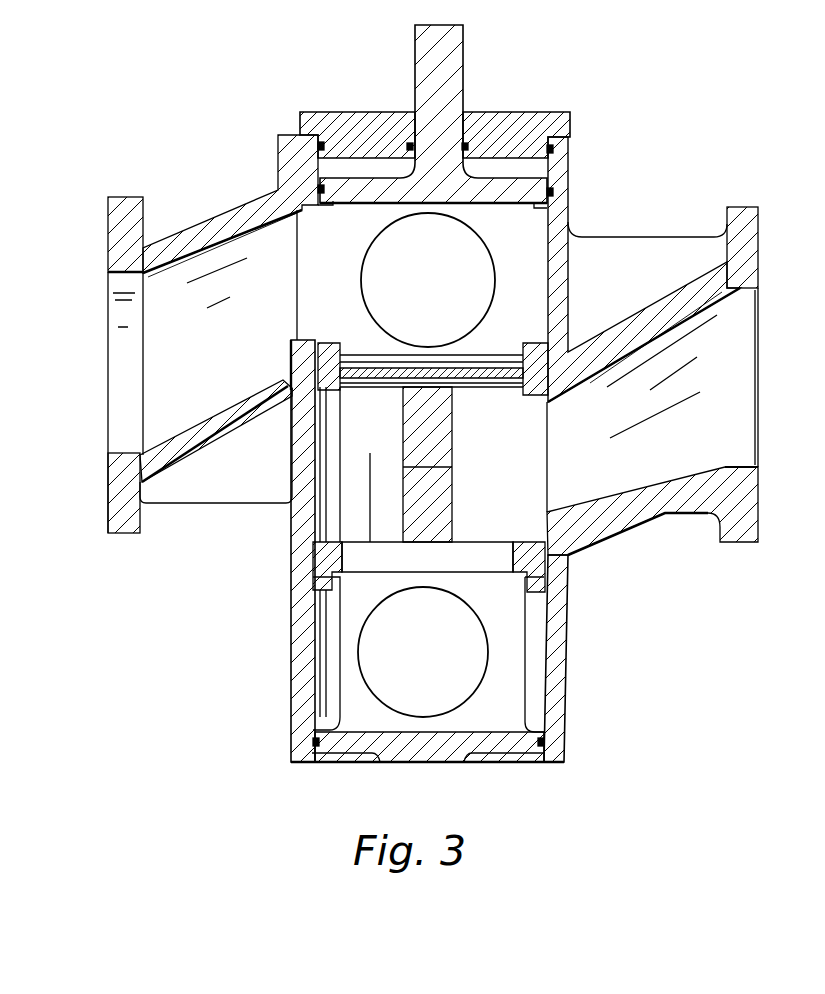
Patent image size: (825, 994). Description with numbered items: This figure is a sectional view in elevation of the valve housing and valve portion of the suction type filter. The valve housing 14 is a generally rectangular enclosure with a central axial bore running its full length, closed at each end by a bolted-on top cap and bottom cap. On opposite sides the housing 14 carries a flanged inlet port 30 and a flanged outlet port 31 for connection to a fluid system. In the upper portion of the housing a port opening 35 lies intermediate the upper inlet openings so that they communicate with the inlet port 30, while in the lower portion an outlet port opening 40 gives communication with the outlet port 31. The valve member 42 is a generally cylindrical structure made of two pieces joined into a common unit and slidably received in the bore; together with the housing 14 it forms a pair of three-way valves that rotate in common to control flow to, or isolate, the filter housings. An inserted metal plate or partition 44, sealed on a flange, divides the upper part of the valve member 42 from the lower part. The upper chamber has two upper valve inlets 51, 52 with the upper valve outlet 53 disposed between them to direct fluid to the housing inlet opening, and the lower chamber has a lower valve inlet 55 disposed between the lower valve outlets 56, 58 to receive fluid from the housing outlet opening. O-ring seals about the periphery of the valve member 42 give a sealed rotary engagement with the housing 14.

The valve housing 14 is at (583, 204).
The inlet port 30 is at (115, 286).
The outlet port 31 is at (742, 288).
The port opening 35 is at (296, 216).
The outlet port opening 40 is at (573, 388).
The valve member 42 is at (562, 167).
The metal plate or partition 44 is at (382, 378).
The upper valve inlet 51 is at (323, 206).
The upper valve inlet 52 is at (543, 208).
The upper valve outlet 53 is at (375, 313).
The lower valve inlet 55 is at (362, 663).
The lower valve outlet 56 is at (320, 545).
The lower valve outlet 58 is at (543, 512).